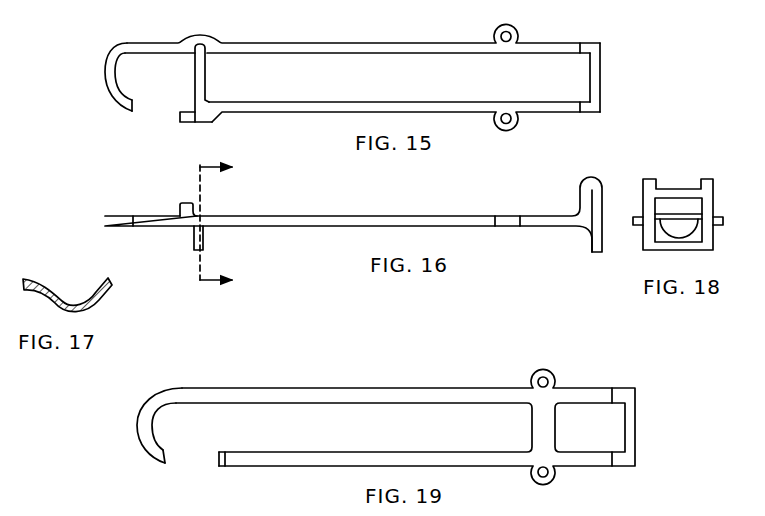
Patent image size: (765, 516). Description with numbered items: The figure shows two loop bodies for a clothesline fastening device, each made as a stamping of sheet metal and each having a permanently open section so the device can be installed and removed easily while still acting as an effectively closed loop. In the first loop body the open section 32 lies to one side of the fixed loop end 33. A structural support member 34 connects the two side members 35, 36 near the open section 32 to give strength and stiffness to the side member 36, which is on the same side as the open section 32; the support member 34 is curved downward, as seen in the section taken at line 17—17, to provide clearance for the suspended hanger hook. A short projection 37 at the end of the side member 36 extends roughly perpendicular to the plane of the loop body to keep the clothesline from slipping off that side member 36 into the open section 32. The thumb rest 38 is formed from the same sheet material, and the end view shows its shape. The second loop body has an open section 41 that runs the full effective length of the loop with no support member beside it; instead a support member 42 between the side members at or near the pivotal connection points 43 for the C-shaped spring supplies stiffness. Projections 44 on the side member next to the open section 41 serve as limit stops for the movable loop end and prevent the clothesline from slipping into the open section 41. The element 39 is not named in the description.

In FIG. 15, the open section 32 is at (162, 80).
In FIG. 15, the fixed loop end 33 is at (104, 78).
In FIG. 15, the structural support member 34 is at (207, 78).
In FIG. 16, the structural support member 34 is at (204, 245).
In FIG. 17, the structural support member 34 is at (90, 298).
In FIG. 15, the side member 35 is at (333, 43).
In FIG. 15, the side member 36 is at (331, 101).
In FIG. 15, the short projection 37 is at (183, 124).
In FIG. 16, the short projection 37 is at (182, 205).
In FIG. 15, the thumb rest 38 is at (600, 77).
In FIG. 16, the thumb rest 38 is at (590, 236).
In FIG. 18, the thumb rest 38 is at (680, 186).
In FIG. 15, the channel body 39 is at (427, 73).
In FIG. 19, the open section 41 is at (198, 440).
In FIG. 19, the support member 42 is at (530, 425).
In FIG. 19, the pivotal connection points 43 is at (531, 376).
In FIG. 19, the projections 44 is at (222, 468).
In FIG. 16, the section line 17— 17 is at (197, 224).